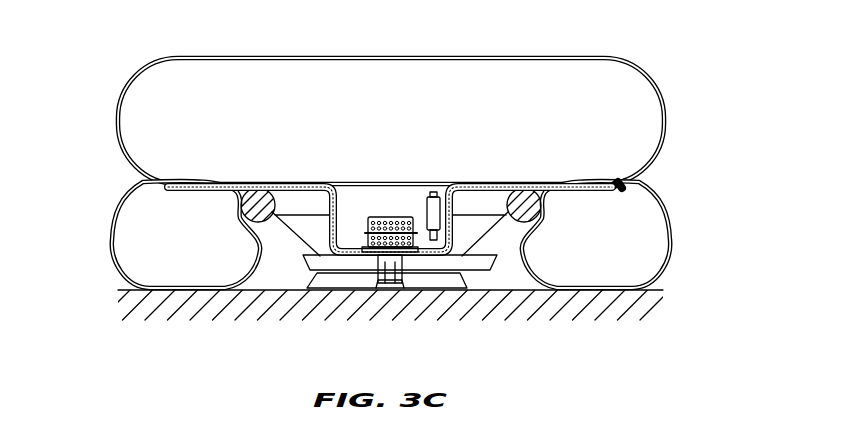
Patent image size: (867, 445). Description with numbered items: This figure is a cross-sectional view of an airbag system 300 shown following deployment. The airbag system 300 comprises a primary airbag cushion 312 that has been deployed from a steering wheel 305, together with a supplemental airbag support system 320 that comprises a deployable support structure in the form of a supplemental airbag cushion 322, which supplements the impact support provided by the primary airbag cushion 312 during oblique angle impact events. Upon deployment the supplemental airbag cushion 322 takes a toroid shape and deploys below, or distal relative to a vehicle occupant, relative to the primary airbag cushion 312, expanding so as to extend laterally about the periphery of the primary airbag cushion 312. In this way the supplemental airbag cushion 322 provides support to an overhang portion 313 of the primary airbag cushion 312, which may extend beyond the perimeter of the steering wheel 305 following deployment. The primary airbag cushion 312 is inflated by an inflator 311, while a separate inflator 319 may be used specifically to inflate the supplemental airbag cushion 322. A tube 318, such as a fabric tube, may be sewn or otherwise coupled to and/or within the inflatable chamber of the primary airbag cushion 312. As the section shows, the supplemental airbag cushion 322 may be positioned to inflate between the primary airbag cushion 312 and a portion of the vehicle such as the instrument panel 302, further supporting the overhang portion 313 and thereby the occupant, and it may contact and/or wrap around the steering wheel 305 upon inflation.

The airbag system 300 is at (672, 57).
The instrument panel 302 is at (192, 305).
The steering wheel 305 is at (548, 273).
The inflator 311 is at (383, 217).
The primary airbag cushion 312 is at (478, 58).
The overhang portion 313 is at (210, 183).
The tube 318 is at (620, 184).
The inflator 319 is at (427, 203).
The supplemental airbag support system 320 is at (675, 220).
The supplemental airbag cushion 322 is at (127, 228).